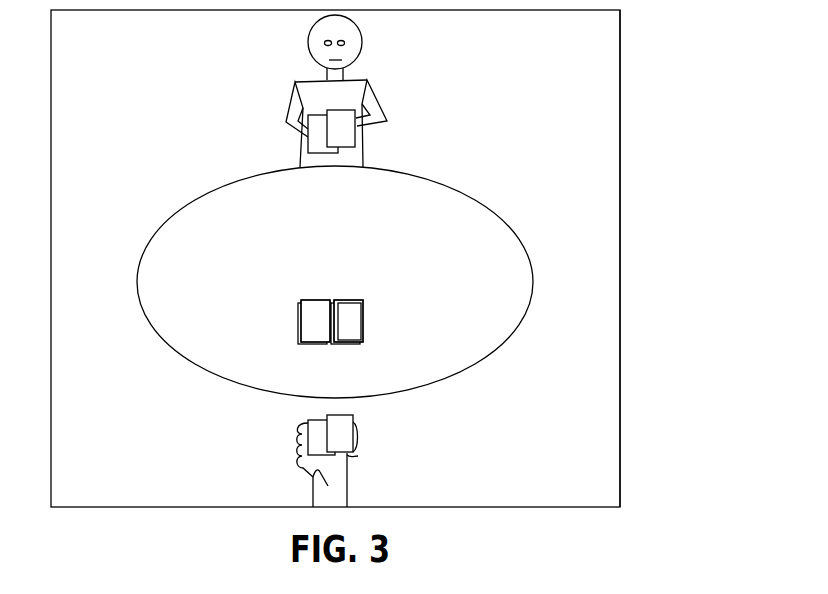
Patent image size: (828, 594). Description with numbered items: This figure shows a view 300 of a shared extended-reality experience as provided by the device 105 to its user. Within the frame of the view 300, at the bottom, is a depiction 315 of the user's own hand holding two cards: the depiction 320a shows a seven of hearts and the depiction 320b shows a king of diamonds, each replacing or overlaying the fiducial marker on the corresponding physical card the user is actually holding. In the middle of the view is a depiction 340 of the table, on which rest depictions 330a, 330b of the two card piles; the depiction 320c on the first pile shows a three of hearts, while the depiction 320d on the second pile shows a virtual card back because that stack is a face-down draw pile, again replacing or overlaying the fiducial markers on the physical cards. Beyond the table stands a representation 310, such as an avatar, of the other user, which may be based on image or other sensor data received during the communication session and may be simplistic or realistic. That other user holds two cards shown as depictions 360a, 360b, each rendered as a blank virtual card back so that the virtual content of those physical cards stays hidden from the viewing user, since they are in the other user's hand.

The view 300 is at (107, 56).
The device 105 is at (621, 103).
The representation 310 is at (316, 82).
The depiction 360a is at (308, 146).
The depiction 360b is at (372, 107).
The depiction of the table 340 is at (223, 240).
The depiction 320c is at (323, 300).
The depiction 320d is at (364, 303).
The depiction of card pile 330a is at (307, 342).
The depiction of card pile 330b is at (350, 343).
The depiction of the user's hand 315 is at (309, 472).
The depiction 320a is at (309, 421).
The depiction 320b is at (357, 456).